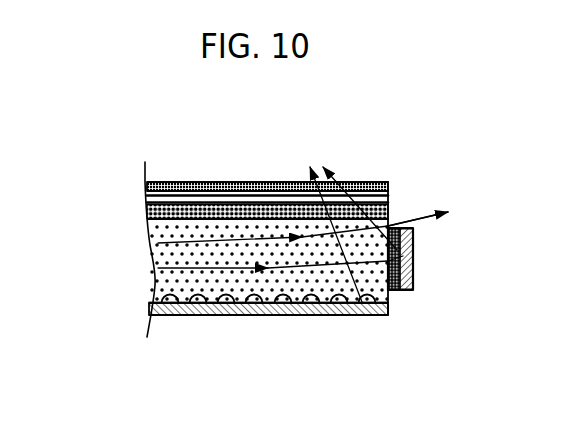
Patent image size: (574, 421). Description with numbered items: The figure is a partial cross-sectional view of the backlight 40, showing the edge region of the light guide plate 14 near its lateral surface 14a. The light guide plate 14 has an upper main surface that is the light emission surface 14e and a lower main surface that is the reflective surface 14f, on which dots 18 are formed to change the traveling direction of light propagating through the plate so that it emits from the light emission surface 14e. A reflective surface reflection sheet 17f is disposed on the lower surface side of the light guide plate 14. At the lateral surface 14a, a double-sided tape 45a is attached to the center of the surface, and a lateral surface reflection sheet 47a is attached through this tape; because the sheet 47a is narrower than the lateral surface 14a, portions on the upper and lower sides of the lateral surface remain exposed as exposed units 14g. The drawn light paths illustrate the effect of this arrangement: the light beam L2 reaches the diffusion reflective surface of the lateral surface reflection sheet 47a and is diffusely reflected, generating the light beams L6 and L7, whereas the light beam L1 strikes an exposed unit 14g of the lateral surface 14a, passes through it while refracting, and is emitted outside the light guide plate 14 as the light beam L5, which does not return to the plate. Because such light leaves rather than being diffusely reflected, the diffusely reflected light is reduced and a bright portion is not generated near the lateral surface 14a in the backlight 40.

The light guide plate 14 is at (164, 284).
The light emission surface 14e is at (208, 213).
The reflective surface 14f is at (216, 314).
The exposed units 14g is at (390, 226).
The lateral surface 14a is at (413, 235).
The reflective surface reflection sheet 17f is at (312, 314).
The dots 18 is at (250, 315).
The backlight 40 is at (397, 155).
The double-sided tape 45a is at (413, 265).
The lateral surface reflection sheet 47a is at (413, 254).
The light beam L1 is at (157, 233).
The light beam L2 is at (157, 268).
The light beam L5 is at (450, 208).
The light beam L6 is at (330, 167).
The light beam L7 is at (306, 166).